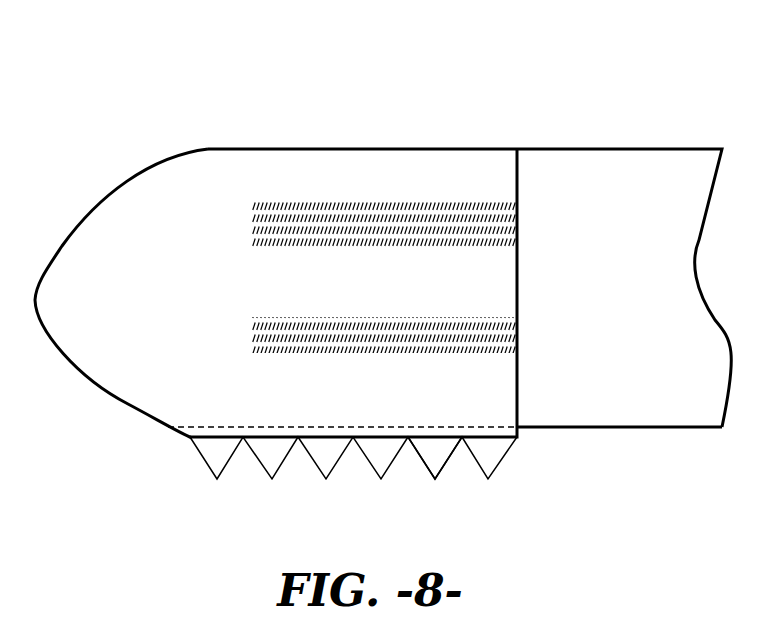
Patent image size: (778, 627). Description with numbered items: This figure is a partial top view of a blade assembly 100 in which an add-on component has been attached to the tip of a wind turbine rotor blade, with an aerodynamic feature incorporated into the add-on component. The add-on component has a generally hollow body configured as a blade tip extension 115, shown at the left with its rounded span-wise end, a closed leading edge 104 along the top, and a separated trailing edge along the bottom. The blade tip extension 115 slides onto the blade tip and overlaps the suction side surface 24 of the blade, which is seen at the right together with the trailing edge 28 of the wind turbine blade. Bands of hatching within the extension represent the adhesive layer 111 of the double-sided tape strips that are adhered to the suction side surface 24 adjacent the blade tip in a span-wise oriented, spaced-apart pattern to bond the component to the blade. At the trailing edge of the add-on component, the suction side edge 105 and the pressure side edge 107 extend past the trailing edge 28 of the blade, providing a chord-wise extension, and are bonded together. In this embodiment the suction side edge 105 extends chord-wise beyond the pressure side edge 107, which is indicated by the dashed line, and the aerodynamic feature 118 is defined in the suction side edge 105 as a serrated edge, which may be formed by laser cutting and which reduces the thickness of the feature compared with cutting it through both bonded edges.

The blade assembly 100 is at (455, 124).
The closed leading edge 104 is at (290, 147).
The blade tip extension 115 is at (147, 179).
The adhesive layer 111 is at (252, 211).
The pressure side edge 107 is at (188, 426).
The suction side edge 105 is at (266, 438).
The aerodynamic feature 118 is at (443, 470).
The suction side surface 24 is at (655, 158).
The trailing edge of the wind turbine blade 28 is at (652, 432).